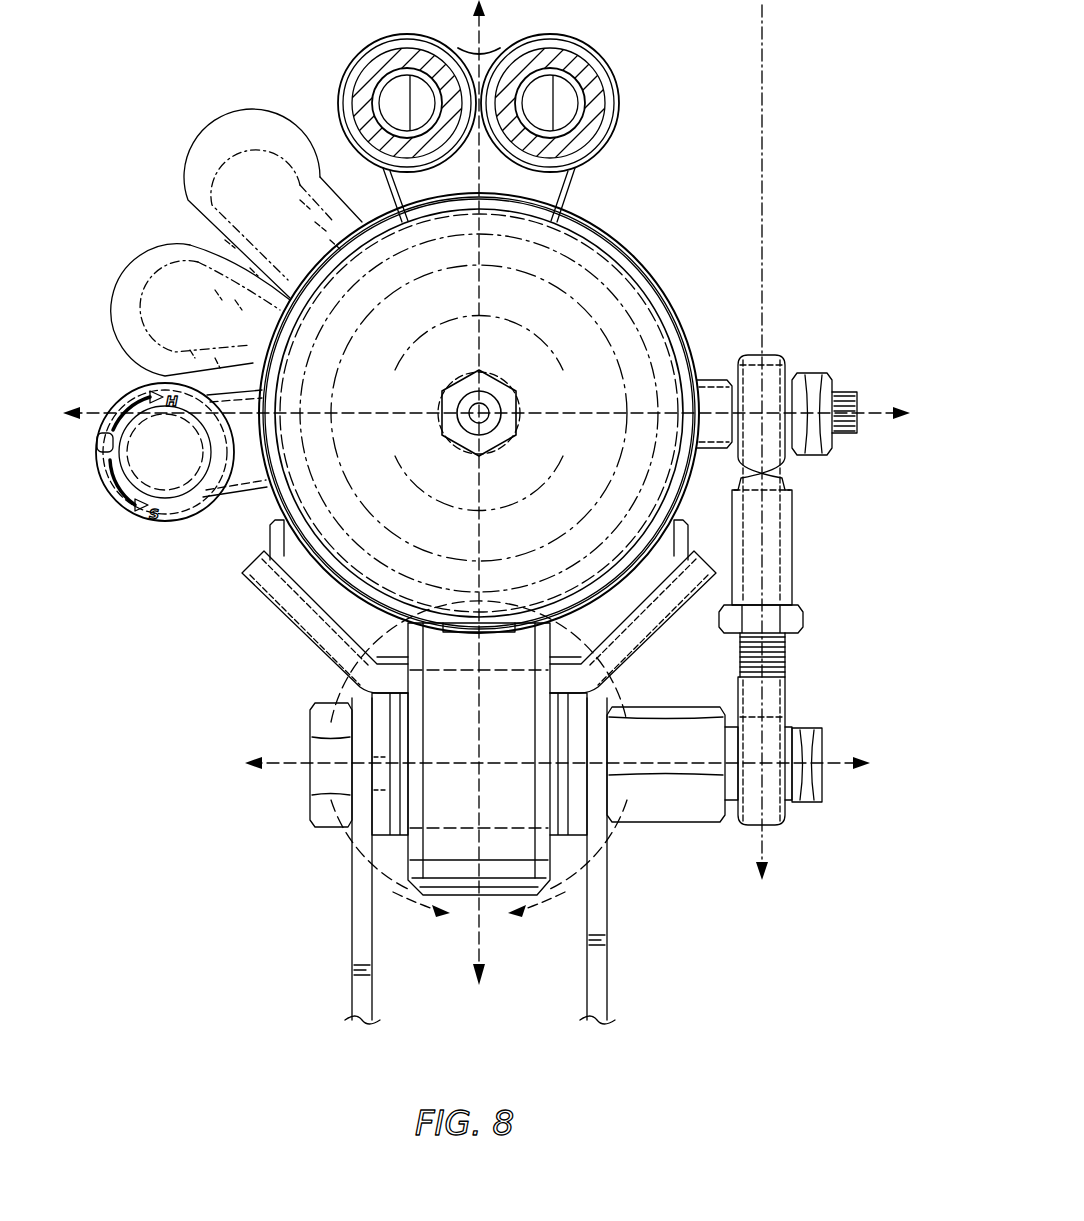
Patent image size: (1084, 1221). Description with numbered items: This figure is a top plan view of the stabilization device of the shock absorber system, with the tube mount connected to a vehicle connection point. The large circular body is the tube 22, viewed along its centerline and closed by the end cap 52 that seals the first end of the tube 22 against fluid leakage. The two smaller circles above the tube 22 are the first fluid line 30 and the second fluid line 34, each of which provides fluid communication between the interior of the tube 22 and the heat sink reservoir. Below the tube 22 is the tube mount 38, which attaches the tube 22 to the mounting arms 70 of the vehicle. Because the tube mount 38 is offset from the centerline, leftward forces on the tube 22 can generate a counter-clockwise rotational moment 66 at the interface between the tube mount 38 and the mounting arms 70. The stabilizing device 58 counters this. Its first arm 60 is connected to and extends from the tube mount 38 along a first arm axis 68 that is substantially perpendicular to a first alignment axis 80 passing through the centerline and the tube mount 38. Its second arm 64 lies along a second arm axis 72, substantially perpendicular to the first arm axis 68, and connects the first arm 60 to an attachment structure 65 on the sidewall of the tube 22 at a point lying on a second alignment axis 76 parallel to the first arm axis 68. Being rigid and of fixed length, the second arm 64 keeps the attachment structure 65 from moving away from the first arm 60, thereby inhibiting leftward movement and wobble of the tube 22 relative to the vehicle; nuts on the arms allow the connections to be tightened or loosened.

The tube 22 is at (598, 232).
The first fluid line 30 is at (605, 60).
The second fluid line 34 is at (345, 66).
The tube mount 38 is at (520, 852).
The end cap 52 is at (598, 292).
The stabilizing device 58 is at (822, 845).
The first arm 60 is at (670, 828).
The second arm 64 is at (830, 543).
The attachment structure 65 is at (704, 378).
The rotational moment 66 is at (398, 893).
The first arm axis 68 is at (455, 790).
The mounting arms 70 is at (600, 993).
The second arm axis 72 is at (765, 75).
The second alignment axis 76 is at (876, 410).
The first alignment axis 80 is at (410, 556).